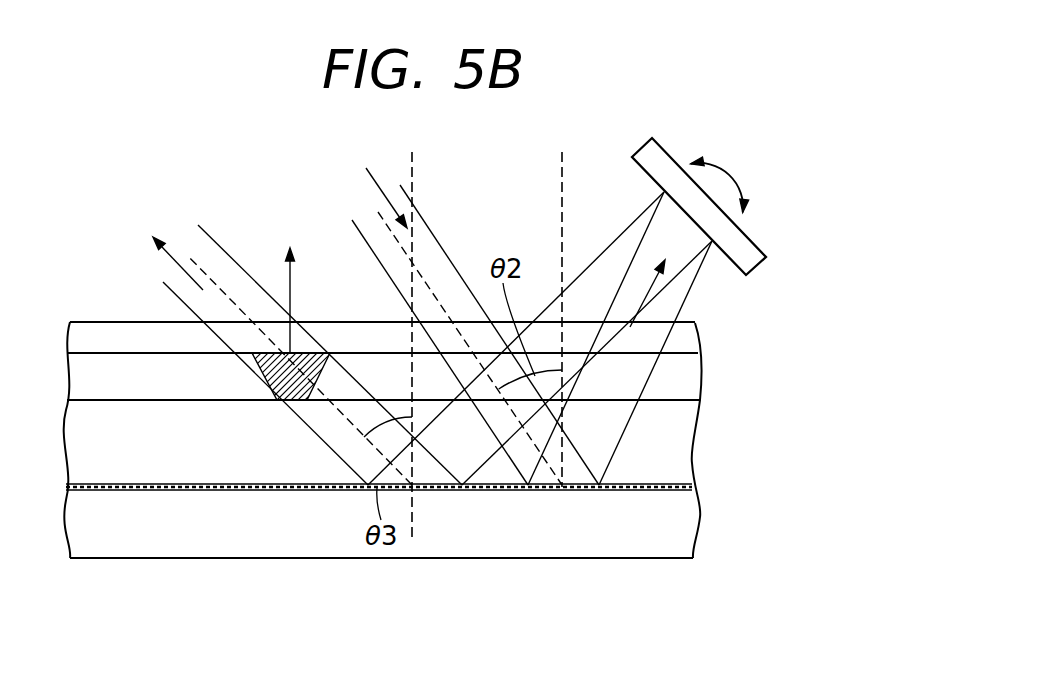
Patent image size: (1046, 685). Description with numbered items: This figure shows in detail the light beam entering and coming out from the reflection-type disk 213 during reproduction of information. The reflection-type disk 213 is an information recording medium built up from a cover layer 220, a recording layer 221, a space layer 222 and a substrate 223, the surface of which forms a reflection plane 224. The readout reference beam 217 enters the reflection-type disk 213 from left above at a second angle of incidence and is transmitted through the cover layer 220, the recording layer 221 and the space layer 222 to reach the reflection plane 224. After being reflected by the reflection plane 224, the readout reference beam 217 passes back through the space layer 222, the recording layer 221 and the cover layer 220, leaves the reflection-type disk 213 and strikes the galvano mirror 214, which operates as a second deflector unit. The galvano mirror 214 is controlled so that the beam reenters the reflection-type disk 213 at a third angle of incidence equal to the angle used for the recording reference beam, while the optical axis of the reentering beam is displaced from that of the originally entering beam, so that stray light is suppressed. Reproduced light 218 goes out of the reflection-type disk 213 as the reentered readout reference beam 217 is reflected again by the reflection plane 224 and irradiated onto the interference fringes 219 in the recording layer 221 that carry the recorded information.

The reflection-type disk 213 is at (800, 325).
The galvano mirror 214 is at (760, 243).
The readout reference beam 217 is at (370, 177).
The reproduced light 218 is at (287, 277).
The interference fringes 219 is at (260, 390).
The cover layer 220 is at (682, 340).
The recording layer 221 is at (682, 380).
The space layer 222 is at (682, 438).
The substrate 223 is at (682, 522).
The reflection plane 224 is at (507, 489).